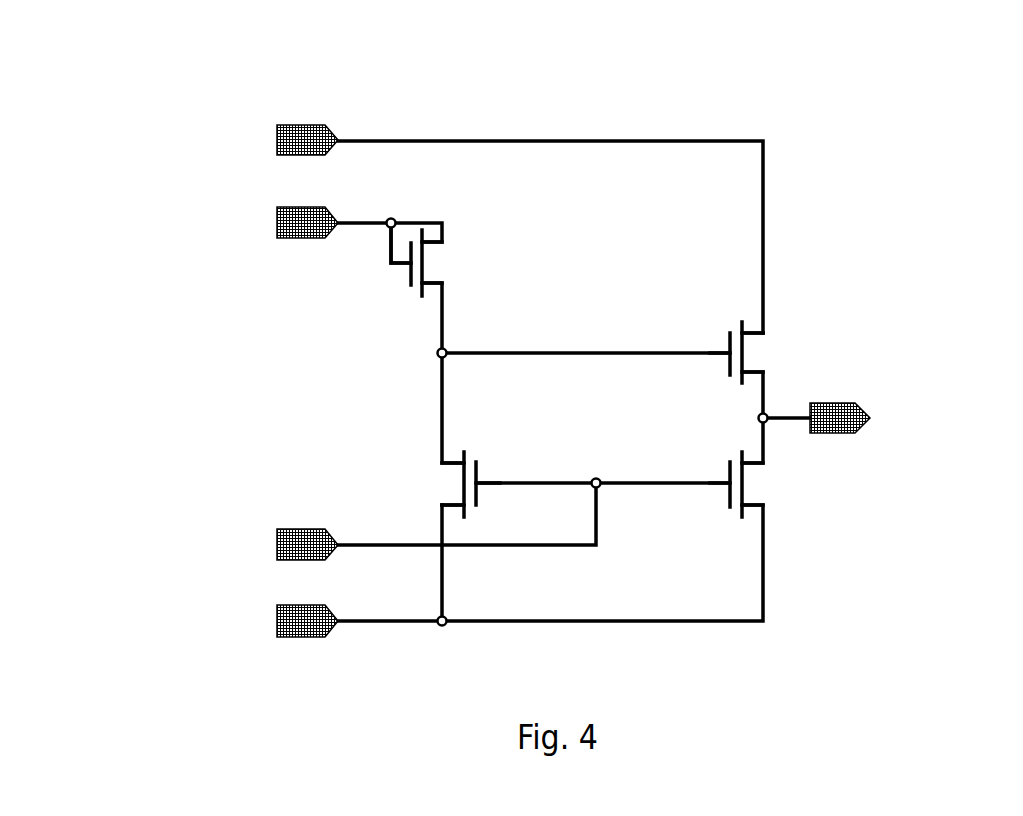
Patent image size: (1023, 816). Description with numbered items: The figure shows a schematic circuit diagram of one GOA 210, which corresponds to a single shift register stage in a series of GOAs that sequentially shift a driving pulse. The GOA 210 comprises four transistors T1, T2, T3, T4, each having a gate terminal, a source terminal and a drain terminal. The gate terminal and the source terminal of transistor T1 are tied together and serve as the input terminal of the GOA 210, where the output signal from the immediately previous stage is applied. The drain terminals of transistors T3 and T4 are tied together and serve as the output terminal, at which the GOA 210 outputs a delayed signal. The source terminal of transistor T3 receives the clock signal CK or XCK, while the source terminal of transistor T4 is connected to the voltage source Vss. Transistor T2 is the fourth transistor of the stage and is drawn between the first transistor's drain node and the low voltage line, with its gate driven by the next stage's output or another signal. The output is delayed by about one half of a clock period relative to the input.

The GOA 210 is at (558, 61).
The transistor T1 is at (440, 259).
The transistor T2 is at (446, 484).
The transistor T3 is at (761, 352).
The transistor T4 is at (761, 484).